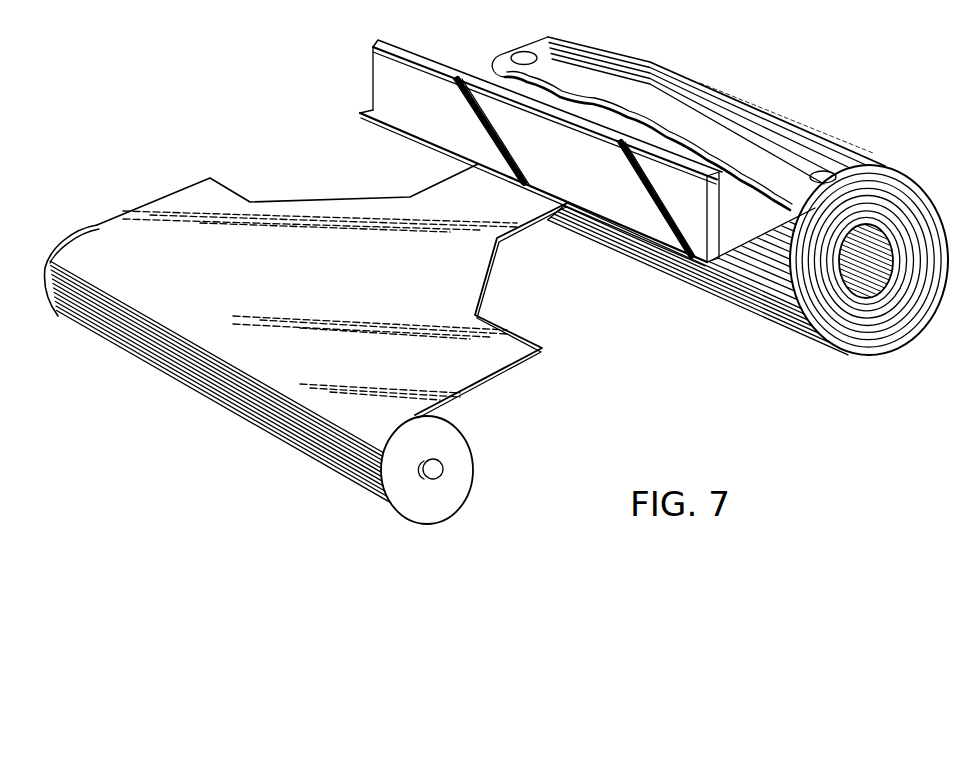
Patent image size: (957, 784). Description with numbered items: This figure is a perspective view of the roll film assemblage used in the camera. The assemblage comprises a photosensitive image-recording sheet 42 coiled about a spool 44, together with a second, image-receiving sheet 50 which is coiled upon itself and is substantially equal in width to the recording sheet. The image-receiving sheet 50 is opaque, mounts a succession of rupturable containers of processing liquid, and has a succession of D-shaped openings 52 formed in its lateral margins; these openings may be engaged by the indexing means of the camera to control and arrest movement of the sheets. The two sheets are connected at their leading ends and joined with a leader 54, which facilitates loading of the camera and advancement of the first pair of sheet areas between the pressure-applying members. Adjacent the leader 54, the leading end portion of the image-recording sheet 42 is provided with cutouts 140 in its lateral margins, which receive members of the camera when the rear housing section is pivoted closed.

The image-recording sheet 42 is at (341, 292).
The spool 44 is at (466, 440).
The image-receiving sheet 50 is at (687, 121).
The D-shaped openings 52 is at (525, 51).
The leader 54 is at (427, 62).
The cutouts 140 is at (233, 192).